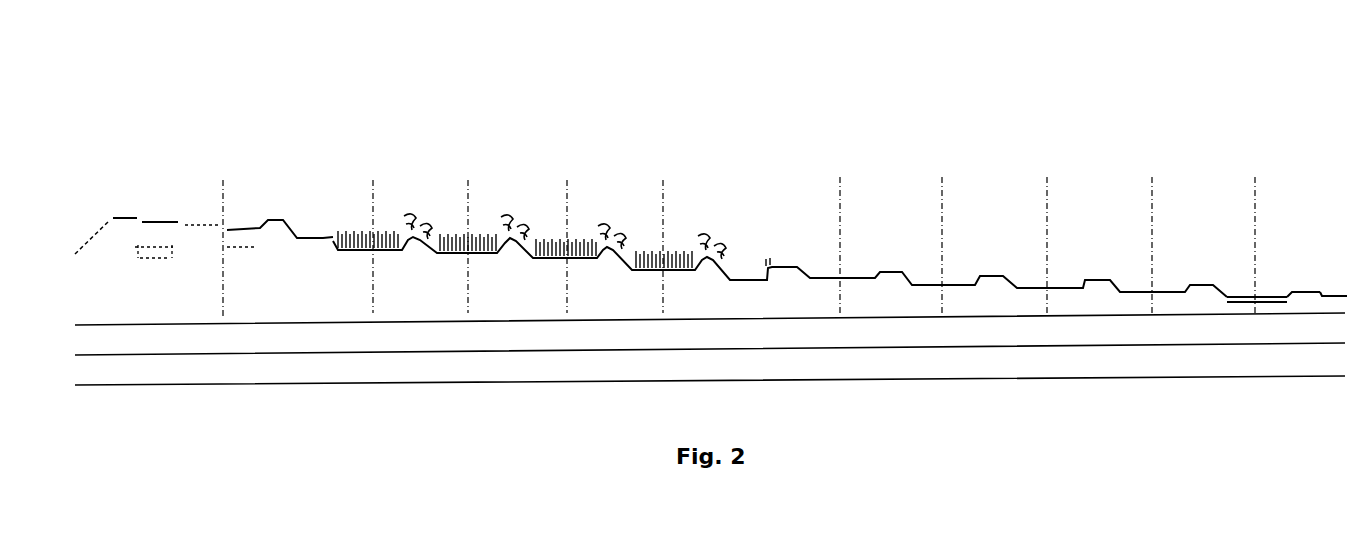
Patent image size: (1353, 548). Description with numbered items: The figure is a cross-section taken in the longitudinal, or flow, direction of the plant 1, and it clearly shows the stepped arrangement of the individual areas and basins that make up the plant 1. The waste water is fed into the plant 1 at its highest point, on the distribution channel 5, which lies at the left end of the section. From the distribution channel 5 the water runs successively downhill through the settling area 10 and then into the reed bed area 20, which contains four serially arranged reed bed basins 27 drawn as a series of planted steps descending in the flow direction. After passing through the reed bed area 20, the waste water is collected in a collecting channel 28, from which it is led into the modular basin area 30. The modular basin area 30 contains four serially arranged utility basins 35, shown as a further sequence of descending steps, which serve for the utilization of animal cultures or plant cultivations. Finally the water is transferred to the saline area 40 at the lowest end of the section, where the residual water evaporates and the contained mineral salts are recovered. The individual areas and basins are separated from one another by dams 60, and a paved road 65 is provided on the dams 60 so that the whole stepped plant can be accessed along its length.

The plant 1 is at (397, 80).
The distribution channel 5 is at (125, 222).
The settling area 10 is at (248, 196).
The reed bed area 20 is at (548, 200).
The reed bed basins 27 is at (383, 300).
The collecting channel 28 is at (746, 275).
The modular basin area 30 is at (1086, 210).
The utility basins 35 is at (853, 308).
The saline area 40 is at (1270, 290).
The dams 60 is at (1319, 292).
The paved road 65 is at (1306, 292).